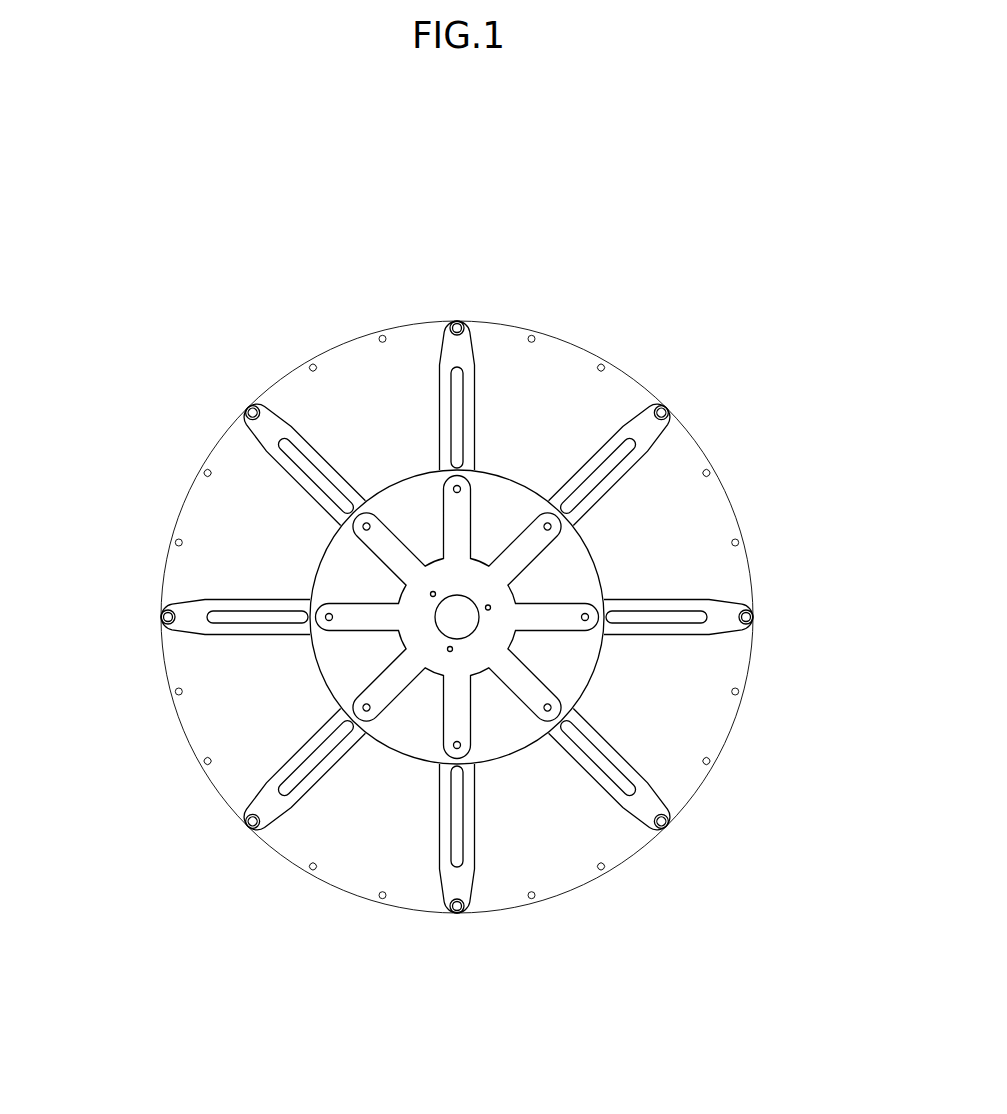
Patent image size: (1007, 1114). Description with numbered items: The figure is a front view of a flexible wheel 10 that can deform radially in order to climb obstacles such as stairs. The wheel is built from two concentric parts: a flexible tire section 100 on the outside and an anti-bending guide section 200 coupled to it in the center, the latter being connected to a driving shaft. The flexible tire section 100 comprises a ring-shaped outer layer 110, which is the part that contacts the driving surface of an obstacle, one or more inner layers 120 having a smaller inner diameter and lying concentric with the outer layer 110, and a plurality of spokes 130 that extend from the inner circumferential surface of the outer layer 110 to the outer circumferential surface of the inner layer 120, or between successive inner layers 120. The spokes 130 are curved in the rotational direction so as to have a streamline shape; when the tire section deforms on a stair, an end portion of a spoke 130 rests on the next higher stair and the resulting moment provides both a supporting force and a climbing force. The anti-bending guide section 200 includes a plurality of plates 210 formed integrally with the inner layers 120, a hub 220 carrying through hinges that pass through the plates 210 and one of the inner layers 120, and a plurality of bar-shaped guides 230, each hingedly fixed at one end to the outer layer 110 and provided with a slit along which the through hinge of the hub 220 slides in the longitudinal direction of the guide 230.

The flexible wheel 10 is at (566, 250).
The flexible tire section 100 is at (637, 368).
The outer layer 110 is at (195, 493).
The inner layer 120 is at (252, 572).
The spokes 130 is at (340, 413).
The anti-bending guide section 200 is at (604, 552).
The plates 210 is at (497, 720).
The hub 220 is at (450, 707).
The guides 230 is at (458, 873).